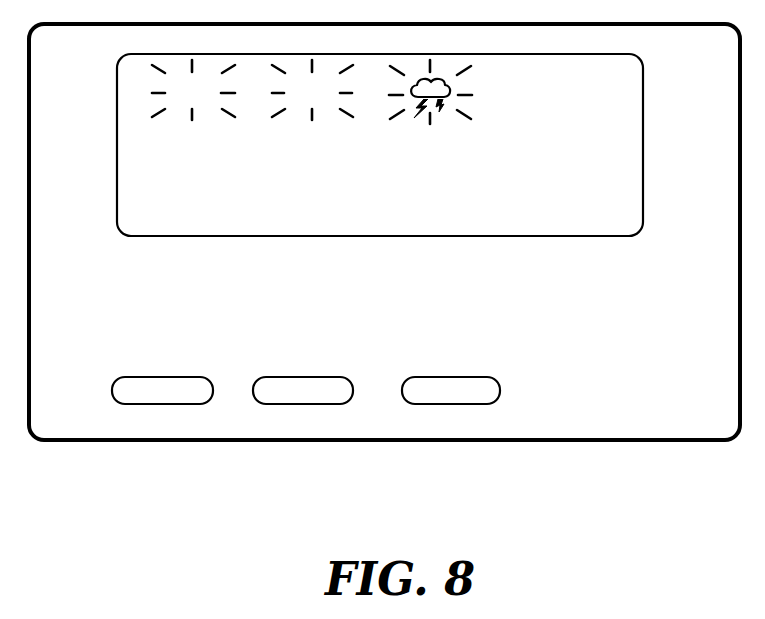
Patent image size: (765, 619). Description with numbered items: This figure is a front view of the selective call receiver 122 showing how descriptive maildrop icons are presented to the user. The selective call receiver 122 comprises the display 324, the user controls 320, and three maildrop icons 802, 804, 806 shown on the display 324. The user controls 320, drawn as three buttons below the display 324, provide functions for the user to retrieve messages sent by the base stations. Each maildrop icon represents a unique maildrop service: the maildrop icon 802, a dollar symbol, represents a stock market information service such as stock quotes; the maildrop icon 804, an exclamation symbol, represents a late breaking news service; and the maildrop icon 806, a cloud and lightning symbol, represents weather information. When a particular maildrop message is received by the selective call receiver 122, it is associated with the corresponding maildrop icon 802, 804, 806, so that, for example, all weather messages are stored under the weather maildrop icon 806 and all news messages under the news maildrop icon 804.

The selective call receiver 122 is at (425, 530).
The display 324 is at (627, 236).
The maildrop icon 802 is at (182, 123).
The maildrop icon 804 is at (307, 123).
The maildrop icon 806 is at (425, 123).
The user controls 320 is at (137, 378).